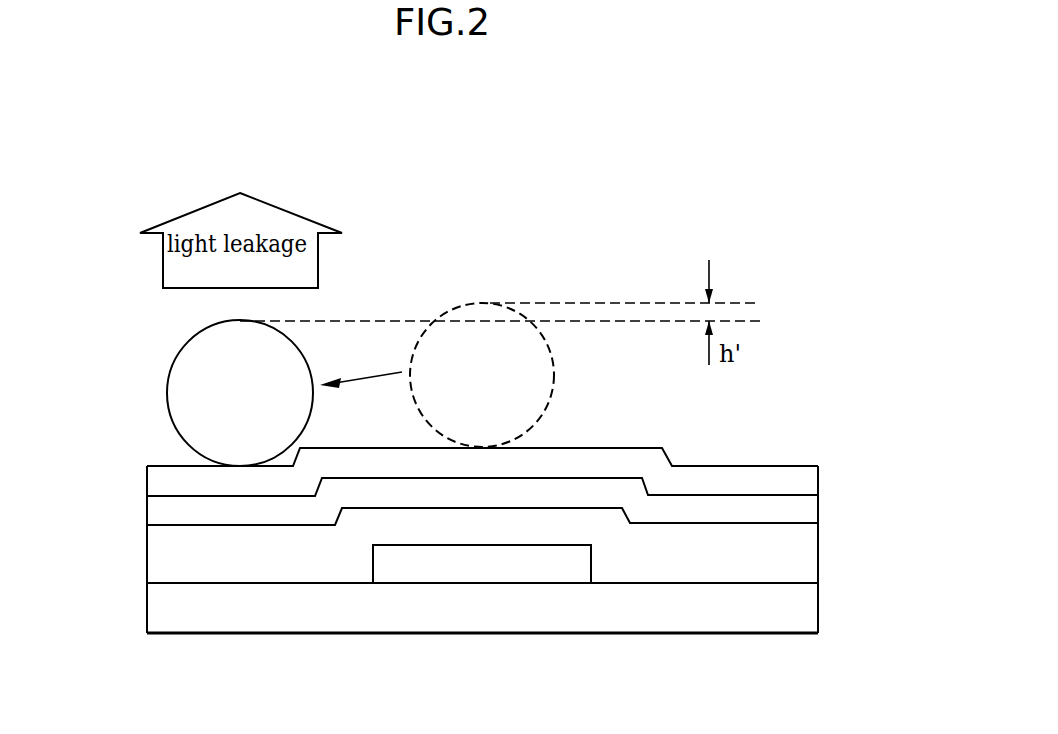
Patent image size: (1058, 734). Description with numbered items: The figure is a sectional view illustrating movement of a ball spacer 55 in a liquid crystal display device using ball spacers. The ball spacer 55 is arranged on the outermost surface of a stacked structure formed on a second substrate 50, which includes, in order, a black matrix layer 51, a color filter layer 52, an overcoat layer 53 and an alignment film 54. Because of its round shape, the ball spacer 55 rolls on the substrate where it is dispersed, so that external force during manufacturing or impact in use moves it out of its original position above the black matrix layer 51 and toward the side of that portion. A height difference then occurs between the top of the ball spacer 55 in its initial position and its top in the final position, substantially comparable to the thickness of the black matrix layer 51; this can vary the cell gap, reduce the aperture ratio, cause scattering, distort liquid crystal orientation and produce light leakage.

The second substrate 50 is at (805, 604).
The black matrix layer 51 is at (488, 572).
The color filter layer 52 is at (805, 555).
The overcoat layer 53 is at (805, 517).
The alignment film 54 is at (805, 475).
The ball spacer 55 is at (180, 375).